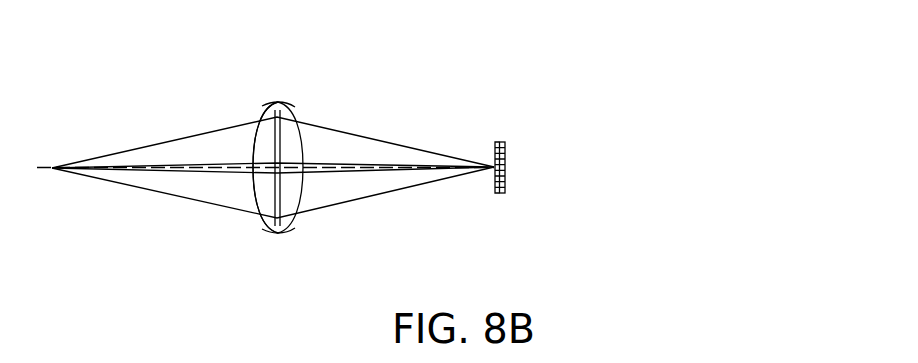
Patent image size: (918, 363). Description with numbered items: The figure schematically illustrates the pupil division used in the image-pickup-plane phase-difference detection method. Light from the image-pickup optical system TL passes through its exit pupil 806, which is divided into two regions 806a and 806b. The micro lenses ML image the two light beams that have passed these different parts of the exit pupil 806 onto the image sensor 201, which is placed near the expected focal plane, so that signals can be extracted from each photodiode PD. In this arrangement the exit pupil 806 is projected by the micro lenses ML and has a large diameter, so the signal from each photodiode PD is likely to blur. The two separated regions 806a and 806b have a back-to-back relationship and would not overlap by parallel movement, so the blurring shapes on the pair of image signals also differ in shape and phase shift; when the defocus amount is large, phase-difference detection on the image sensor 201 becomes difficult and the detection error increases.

The exit pupil 806 is at (277, 101).
The divided region 806a is at (280, 115).
The divided region 806b is at (278, 215).
The image-pickup optical system TL is at (268, 112).
The micro lens ML is at (495, 143).
The photodiode PD is at (508, 158).
The image sensor 201 is at (513, 173).